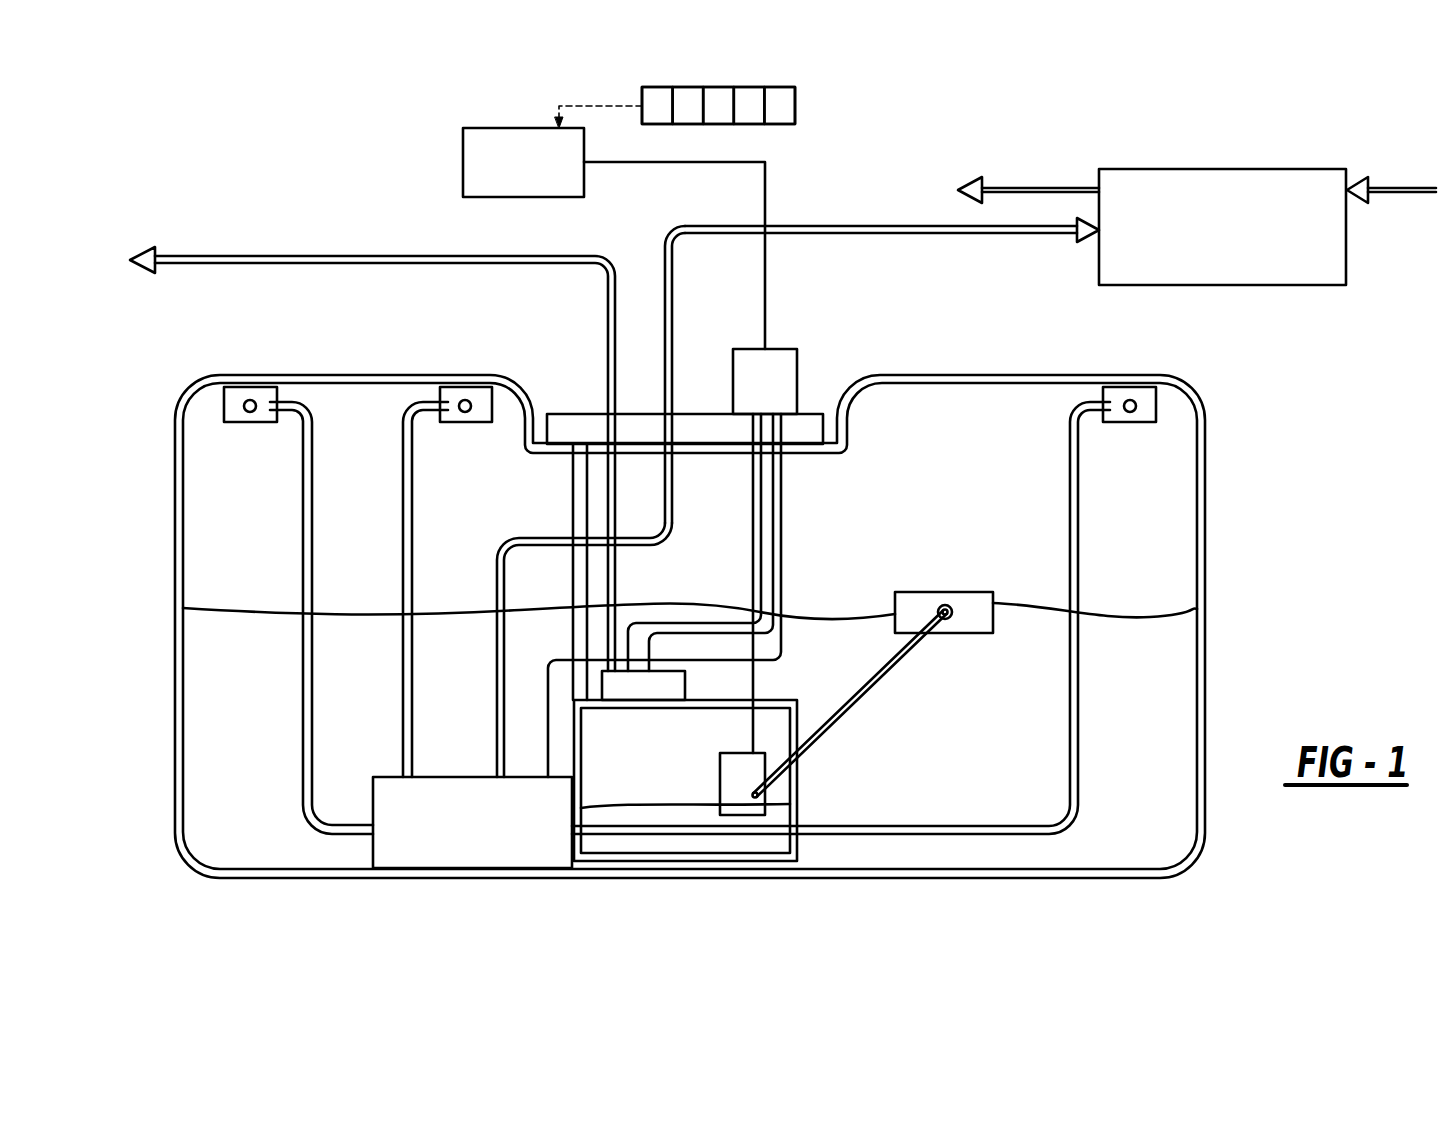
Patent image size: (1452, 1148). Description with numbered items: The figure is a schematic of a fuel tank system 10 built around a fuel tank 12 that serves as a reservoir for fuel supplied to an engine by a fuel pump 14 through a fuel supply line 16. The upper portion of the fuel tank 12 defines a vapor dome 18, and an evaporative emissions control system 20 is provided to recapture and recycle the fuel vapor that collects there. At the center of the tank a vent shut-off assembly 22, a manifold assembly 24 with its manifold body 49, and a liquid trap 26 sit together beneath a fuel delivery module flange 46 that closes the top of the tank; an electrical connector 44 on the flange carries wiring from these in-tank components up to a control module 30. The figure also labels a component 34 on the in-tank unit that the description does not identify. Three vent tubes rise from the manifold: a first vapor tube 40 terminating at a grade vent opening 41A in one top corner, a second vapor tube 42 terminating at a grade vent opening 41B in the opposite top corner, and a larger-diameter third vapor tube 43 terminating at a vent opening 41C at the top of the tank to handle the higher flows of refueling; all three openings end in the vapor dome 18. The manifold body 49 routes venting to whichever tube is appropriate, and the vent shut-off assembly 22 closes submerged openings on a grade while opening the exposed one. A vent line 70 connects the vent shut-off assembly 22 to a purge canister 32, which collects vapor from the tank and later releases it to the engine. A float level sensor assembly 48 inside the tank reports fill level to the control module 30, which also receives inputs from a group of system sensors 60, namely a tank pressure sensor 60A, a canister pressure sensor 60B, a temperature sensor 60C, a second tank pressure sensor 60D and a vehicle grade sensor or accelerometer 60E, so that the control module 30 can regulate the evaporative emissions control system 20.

The fuel tank system 10 is at (957, 117).
The fuel tank 12 is at (1205, 544).
The fuel pump 14 is at (662, 683).
The fuel supply line 16 is at (528, 262).
The vapor dome 18 is at (960, 417).
The evaporative emissions control system 20 is at (900, 337).
The vent shut-off assembly 22 is at (472, 828).
The manifold assembly 24 is at (528, 847).
The liquid trap 26 is at (393, 808).
The control module 30 is at (487, 160).
The purge canister 32 is at (1182, 184).
The valve 34 is at (450, 807).
The first vapor tube 40 is at (303, 523).
The grade vent valve or vent opening 41A is at (267, 413).
The grade vent valve or vent opening 41B is at (1118, 422).
The vent valve or vent opening 41C is at (453, 423).
The second vapor tube 42 is at (1070, 462).
The third vapor tube 43 is at (413, 580).
The electrical connector 44 is at (787, 365).
The fuel delivery module flange 46 is at (577, 423).
The float level sensor assembly 48 is at (948, 594).
The manifold body 49 is at (373, 845).
The system sensors 60 is at (731, 105).
The tank pressure sensor 60A is at (650, 95).
The canister pressure sensor 60B is at (685, 118).
The temperature sensor 60C is at (720, 98).
The tank pressure sensor 60D is at (750, 115).
The vehicle grade sensor and/or vehicle accelerometer 60E is at (820, 92).
The vent line 70 is at (672, 340).